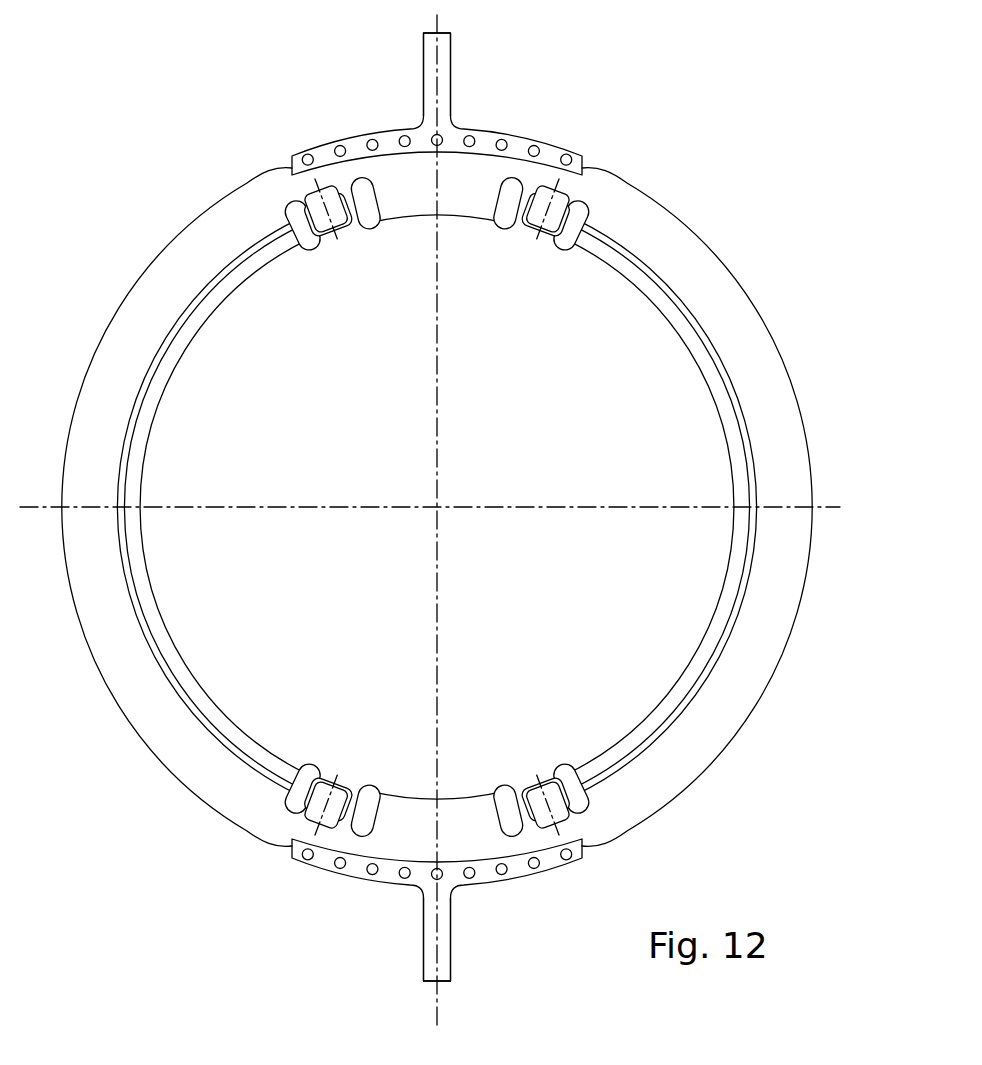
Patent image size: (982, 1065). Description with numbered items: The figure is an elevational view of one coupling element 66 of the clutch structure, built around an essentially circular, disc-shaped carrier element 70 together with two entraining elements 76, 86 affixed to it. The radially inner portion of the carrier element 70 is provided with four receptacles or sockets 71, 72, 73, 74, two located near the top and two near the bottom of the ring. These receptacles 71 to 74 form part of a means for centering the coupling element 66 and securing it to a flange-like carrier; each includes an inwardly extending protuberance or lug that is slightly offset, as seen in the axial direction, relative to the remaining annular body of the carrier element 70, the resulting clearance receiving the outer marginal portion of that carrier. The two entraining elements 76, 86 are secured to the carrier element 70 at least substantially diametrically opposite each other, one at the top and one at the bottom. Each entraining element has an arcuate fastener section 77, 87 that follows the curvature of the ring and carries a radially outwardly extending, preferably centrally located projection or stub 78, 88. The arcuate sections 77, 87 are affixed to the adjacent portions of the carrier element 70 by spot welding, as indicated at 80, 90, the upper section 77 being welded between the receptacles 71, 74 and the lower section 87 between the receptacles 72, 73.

The coupling element 66 is at (706, 236).
The carrier element 70 is at (733, 308).
The receptacle 71 is at (540, 242).
The receptacle 72 is at (541, 778).
The receptacle 73 is at (349, 778).
The receptacle 74 is at (349, 242).
The entraining element 76 is at (474, 111).
The arcuate fastener section 77 is at (386, 132).
The projection 78 is at (450, 49).
The spot weld 80 is at (359, 133).
The entraining element 86 is at (473, 903).
The arcuate fastener section 87 is at (385, 878).
The projection 88 is at (447, 961).
The spot weld 90 is at (358, 882).